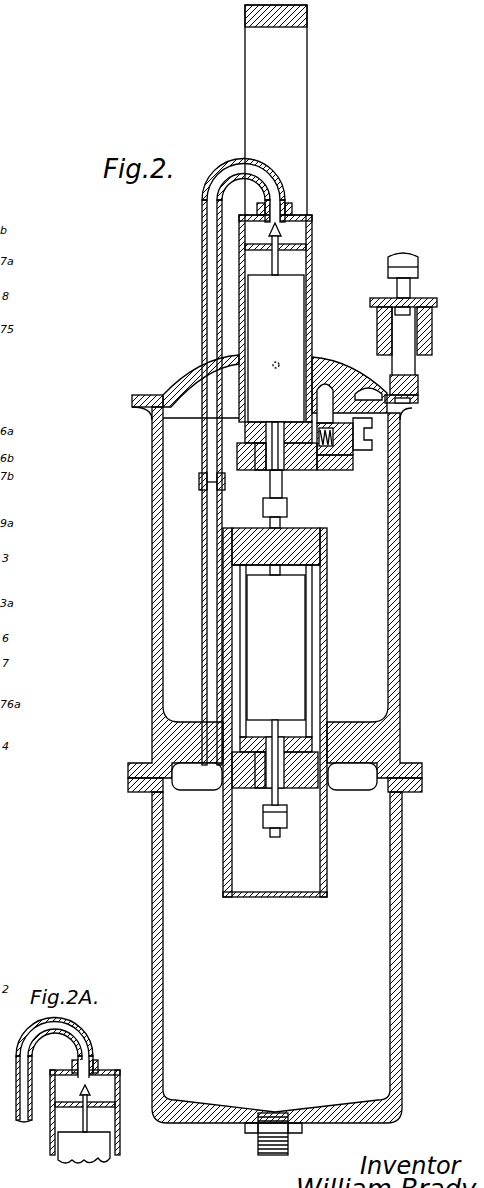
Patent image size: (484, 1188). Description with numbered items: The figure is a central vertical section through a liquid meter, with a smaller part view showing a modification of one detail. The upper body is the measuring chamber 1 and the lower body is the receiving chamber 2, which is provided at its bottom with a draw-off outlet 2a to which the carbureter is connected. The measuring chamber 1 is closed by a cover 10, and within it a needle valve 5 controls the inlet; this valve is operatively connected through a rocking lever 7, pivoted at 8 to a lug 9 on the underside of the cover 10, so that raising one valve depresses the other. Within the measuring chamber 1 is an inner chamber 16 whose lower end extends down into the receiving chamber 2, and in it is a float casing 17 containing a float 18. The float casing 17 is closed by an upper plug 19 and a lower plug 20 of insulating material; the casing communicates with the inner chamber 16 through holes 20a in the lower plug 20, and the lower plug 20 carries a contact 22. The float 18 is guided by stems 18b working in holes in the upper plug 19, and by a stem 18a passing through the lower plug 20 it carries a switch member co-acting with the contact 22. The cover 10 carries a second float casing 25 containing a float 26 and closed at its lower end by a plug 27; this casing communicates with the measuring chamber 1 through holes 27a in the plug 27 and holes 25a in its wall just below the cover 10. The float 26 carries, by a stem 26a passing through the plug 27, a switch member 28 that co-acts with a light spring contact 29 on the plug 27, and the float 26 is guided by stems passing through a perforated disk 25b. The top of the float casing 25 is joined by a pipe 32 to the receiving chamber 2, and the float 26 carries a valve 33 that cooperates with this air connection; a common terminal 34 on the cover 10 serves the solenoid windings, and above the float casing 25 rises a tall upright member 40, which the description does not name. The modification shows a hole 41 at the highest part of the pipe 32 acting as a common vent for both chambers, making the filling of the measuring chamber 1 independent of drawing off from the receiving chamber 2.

In FIG. 2, the measuring chamber 1 is at (152, 638).
In FIG. 2, the receiving chamber 2 is at (402, 1022).
In FIG. 2, the draw-off outlet 2a is at (289, 1142).
In FIG. 2, the needle valve 5 is at (283, 528).
In FIG. 2, the rocking lever 7 is at (320, 465).
In FIG. 2, the pivot 8 is at (353, 442).
In FIG. 2, the lug 9 is at (400, 420).
In FIG. 2, the cover 10 is at (162, 397).
In FIG. 2, the inner chamber 16 is at (327, 614).
In FIG. 2, the float casing 17 is at (312, 652).
In FIG. 2, the float 18 is at (276, 647).
In FIG. 2, the stem 18a is at (281, 790).
In FIG. 2, the guide stems 18b is at (313, 572).
In FIG. 2, the upper plug 19 is at (322, 540).
In FIG. 2, the lower plug 20 is at (272, 742).
In FIG. 2, the holes 20a is at (263, 784).
In FIG. 2, the contact 22 is at (280, 838).
In FIG. 2, the second float casing 25 is at (312, 242).
In FIG. 2A, the second float casing 25 is at (120, 1107).
In FIG. 2, the holes 25a is at (276, 369).
In FIG. 2A, the holes 25a is at (85, 1108).
In FIG. 2, the perforated disk 25b is at (303, 247).
In FIG. 2A, the perforated disk 25b is at (105, 1102).
In FIG. 2, the float 26 is at (276, 348).
In FIG. 2A, the float 26 is at (84, 1147).
In FIG. 2, the stem 26a is at (280, 479).
In FIG. 2, the plug 27 is at (271, 430).
In FIG. 2, the holes 27a is at (264, 472).
In FIG. 2, the switch member 28 is at (263, 510).
In FIG. 2, the light spring contact 29 is at (283, 490).
In FIG. 2, the pipe 32 is at (202, 318).
In FIG. 2A, the pipe 32 is at (16, 1090).
In FIG. 2, the valve 33 is at (282, 230).
In FIG. 2A, the valve 33 is at (96, 1079).
In FIG. 2, the common terminal 34 is at (411, 294).
In FIG. 2, the pipe 40 is at (307, 173).
In FIG. 2A, the hole 41 is at (55, 1019).